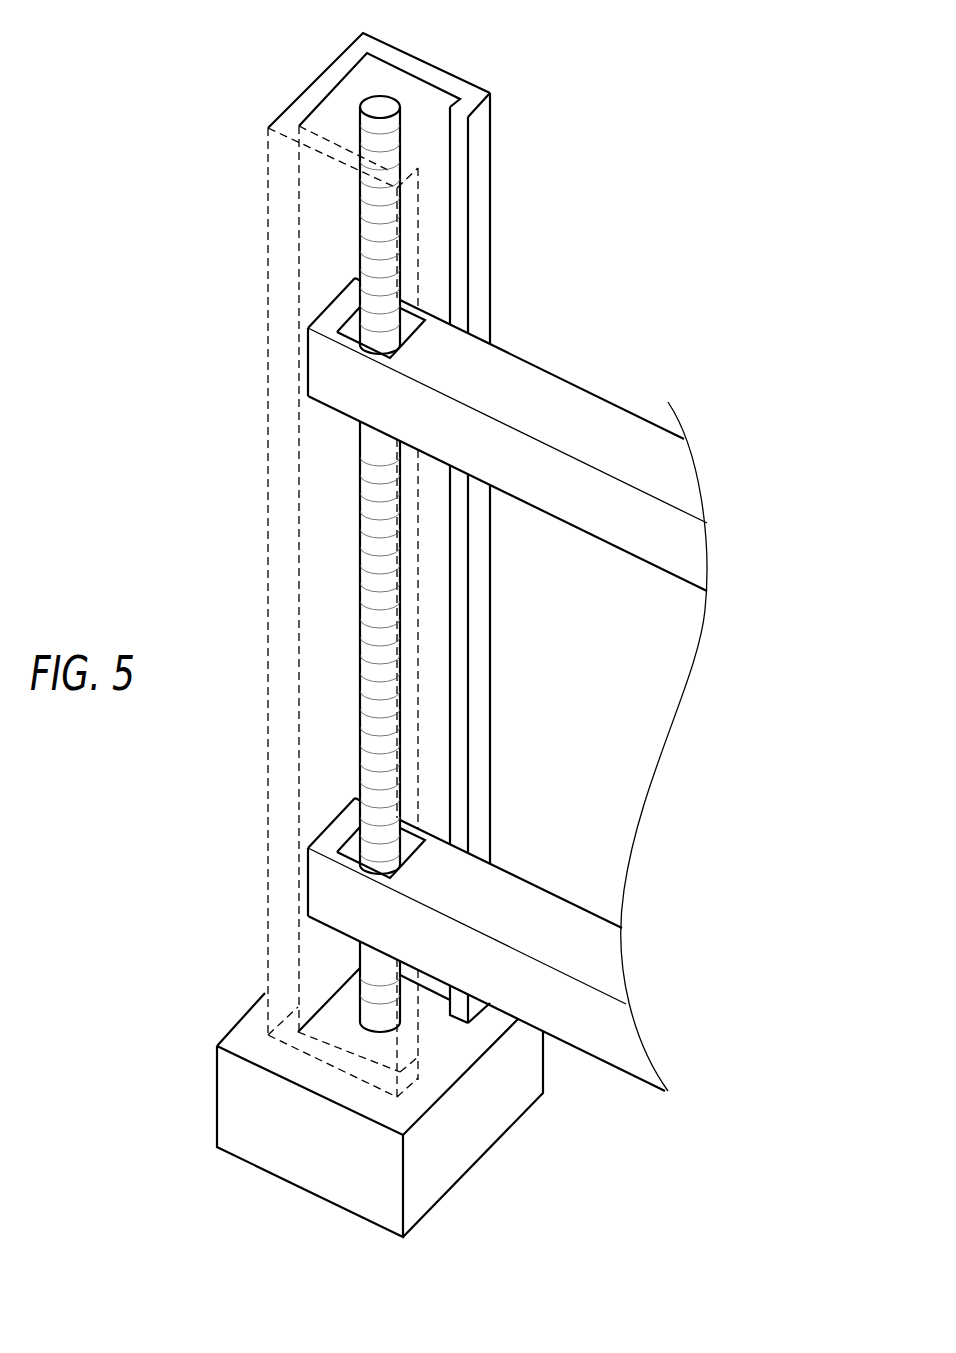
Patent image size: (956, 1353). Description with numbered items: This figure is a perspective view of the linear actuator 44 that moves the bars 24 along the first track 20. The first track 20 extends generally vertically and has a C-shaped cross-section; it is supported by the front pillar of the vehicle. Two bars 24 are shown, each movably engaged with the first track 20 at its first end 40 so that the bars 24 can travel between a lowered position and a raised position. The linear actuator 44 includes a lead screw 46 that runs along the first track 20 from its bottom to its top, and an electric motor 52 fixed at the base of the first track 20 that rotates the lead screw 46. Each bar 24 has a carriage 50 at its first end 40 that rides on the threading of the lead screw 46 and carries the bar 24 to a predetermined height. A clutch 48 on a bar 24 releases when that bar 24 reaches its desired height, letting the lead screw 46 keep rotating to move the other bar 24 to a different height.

The first track 20 is at (481, 168).
The bar 24 is at (585, 425).
The first end 40 is at (428, 348).
The linear actuator 44 is at (407, 115).
The lead screw 46 is at (379, 107).
The clutch 48 is at (383, 347).
The carriage 50 is at (362, 345).
The electric motor 52 is at (443, 1165).